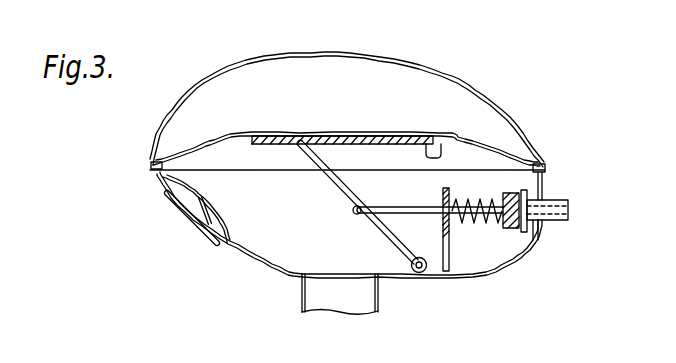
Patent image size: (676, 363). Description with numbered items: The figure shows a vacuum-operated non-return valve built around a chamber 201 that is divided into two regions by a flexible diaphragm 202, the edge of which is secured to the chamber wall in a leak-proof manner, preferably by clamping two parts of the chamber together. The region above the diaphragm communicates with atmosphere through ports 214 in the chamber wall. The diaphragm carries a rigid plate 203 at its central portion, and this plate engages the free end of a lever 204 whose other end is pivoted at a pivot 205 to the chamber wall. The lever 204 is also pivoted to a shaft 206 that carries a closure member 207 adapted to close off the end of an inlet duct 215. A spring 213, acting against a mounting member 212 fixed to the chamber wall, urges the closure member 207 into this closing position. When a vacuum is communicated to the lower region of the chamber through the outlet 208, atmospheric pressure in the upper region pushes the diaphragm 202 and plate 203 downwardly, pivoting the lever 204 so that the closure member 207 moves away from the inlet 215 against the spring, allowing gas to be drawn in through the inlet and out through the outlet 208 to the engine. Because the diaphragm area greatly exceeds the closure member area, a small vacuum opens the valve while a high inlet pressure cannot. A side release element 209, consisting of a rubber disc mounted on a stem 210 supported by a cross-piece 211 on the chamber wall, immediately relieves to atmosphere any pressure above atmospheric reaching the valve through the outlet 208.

The chamber 201 is at (481, 99).
The flexible diaphragm 202 is at (483, 145).
The rigid plate 203 is at (440, 148).
The lever 204 is at (397, 250).
The pivot 205 is at (420, 271).
The shaft 206 is at (402, 206).
The closure member 207 is at (509, 229).
The outlet 208 is at (323, 298).
The side release element 209 is at (170, 202).
The stem 210 is at (204, 232).
The cross-piece 211 is at (240, 226).
The mounting member 212 is at (450, 255).
The spring 213 is at (474, 224).
The ports 214 is at (160, 128).
The inlet duct 215 is at (552, 207).